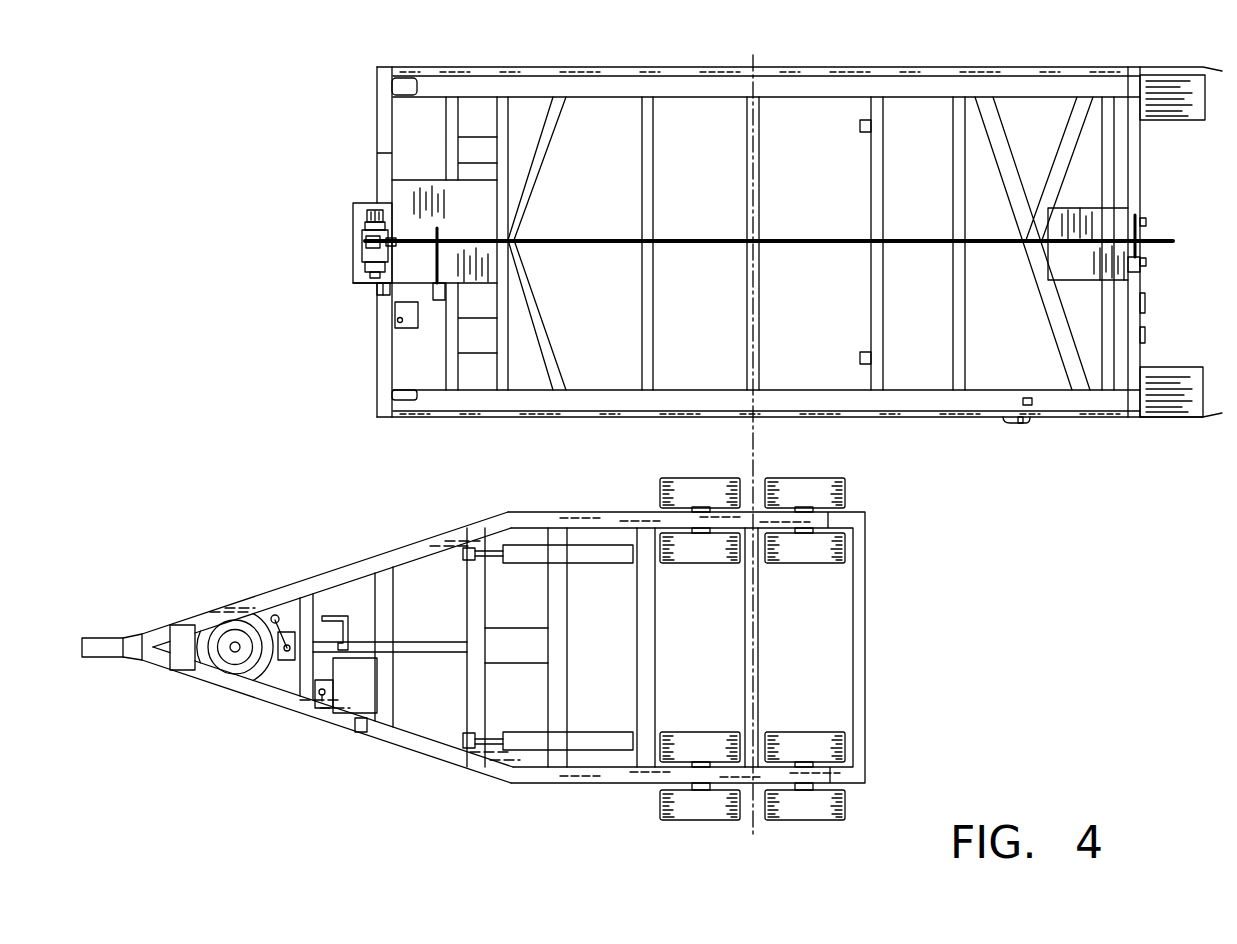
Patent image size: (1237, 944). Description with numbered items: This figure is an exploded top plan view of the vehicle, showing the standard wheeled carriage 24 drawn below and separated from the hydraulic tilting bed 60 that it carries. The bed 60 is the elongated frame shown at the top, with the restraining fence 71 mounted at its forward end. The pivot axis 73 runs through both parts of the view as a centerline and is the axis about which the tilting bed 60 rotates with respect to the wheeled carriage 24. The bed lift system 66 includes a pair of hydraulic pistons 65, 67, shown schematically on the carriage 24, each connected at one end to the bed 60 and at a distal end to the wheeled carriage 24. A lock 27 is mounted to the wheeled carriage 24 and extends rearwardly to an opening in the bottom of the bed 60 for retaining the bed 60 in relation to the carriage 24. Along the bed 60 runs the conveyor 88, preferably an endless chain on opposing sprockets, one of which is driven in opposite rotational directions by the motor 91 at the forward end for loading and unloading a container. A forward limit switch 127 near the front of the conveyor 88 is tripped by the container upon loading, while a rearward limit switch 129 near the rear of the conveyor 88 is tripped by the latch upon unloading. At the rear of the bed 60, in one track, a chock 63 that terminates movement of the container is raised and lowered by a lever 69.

The wheeled carriage 24 is at (922, 655).
The lock 27 is at (420, 648).
The hydraulic tilting bed 60 is at (266, 251).
The chock 63 is at (1032, 402).
The hydraulic piston 65 is at (520, 552).
The bed lift system 66 is at (433, 730).
The hydraulic piston 67 is at (520, 743).
The lever 69 is at (1020, 423).
The restraining fence 71 is at (383, 95).
The pivot axis 73 is at (754, 432).
The conveyor 88 is at (797, 243).
The motor 91 is at (363, 225).
The forward limit switch 127 is at (437, 300).
The rearward limit switch 129 is at (1140, 270).